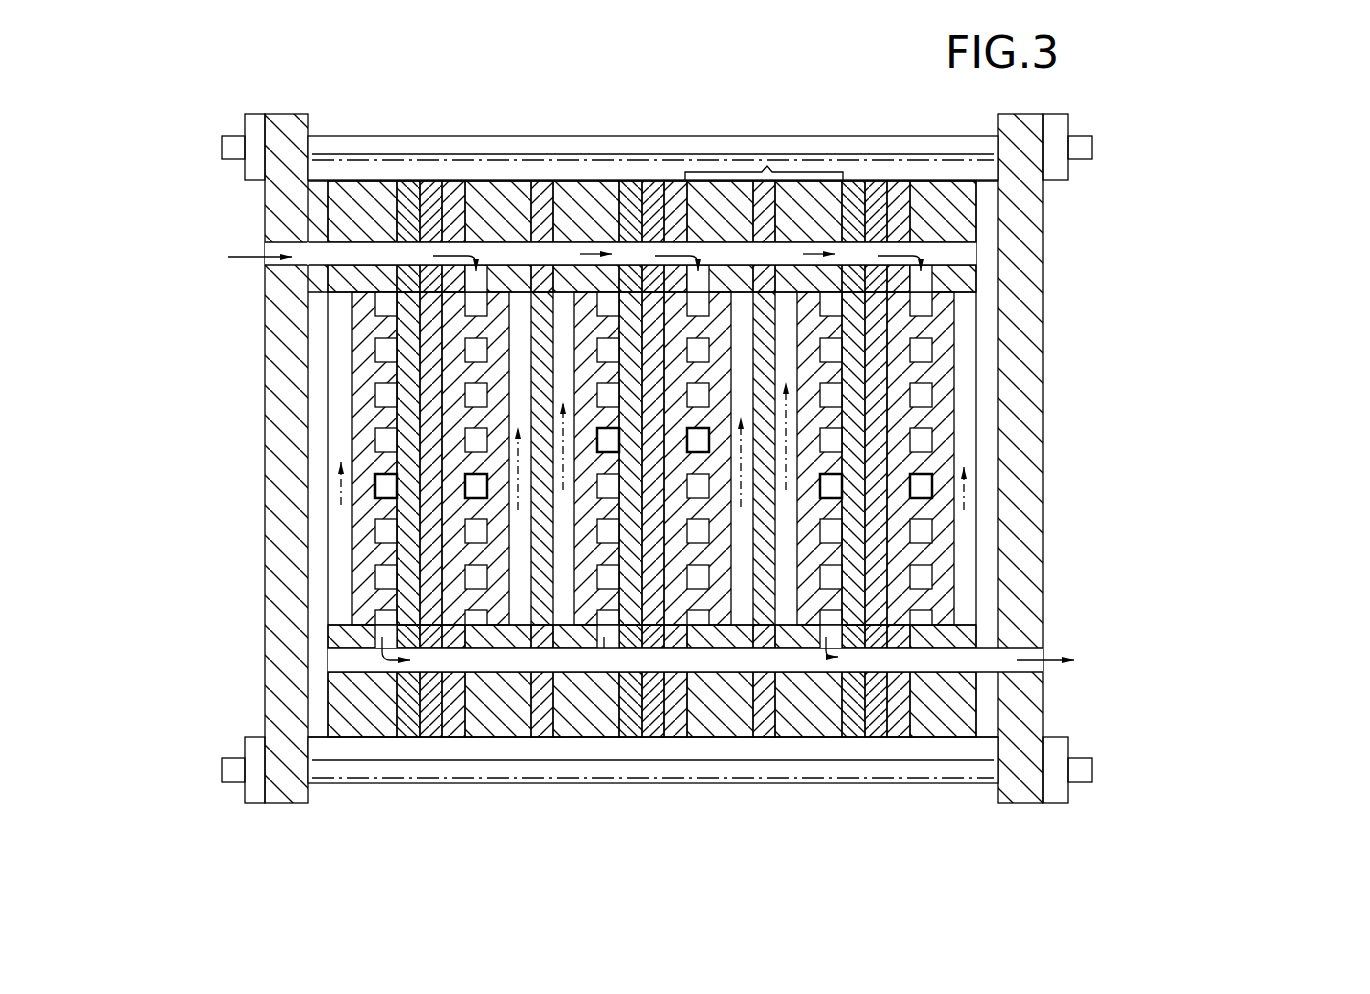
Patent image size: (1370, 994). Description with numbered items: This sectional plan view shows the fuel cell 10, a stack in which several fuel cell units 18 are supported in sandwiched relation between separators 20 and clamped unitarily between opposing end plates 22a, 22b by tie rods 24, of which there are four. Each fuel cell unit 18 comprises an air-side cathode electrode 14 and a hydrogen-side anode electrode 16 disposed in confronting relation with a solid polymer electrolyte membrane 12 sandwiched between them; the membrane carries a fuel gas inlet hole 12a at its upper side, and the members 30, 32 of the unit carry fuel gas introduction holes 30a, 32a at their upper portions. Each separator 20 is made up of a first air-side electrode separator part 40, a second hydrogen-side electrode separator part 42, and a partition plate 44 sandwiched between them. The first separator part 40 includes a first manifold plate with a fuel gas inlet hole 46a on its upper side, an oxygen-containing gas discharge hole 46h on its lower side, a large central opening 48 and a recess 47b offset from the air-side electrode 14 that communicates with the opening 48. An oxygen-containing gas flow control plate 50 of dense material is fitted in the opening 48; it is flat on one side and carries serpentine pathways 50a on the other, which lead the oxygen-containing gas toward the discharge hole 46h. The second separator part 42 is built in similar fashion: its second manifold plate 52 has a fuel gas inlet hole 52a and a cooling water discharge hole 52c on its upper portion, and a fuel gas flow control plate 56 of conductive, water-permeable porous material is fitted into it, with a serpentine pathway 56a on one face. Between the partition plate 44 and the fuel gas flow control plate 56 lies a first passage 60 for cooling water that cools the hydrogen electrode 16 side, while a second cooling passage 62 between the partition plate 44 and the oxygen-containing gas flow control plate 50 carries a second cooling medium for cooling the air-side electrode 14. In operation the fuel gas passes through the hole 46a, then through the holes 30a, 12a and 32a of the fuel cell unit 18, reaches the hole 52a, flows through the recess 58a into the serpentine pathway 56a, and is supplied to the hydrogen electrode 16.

The fuel cell 10 is at (836, 60).
The solid polymer electrolyte membrane 12 is at (947, 571).
The fuel gas inlet hole 12a is at (421, 129).
The air-side (cathode) electrode 14 is at (852, 623).
The hydrogen-side (anode) electrode 16 is at (898, 599).
The fuel cell unit 18 is at (653, 178).
The separator 20 is at (769, 164).
The end plate 22a is at (270, 553).
The end plate 22b is at (1030, 543).
The tie rod 24 is at (418, 781).
The separator plate 30 is at (878, 732).
The fuel gas introduction hole 30a is at (407, 192).
The separator plate 32 is at (903, 739).
The fuel gas introduction hole 32a is at (447, 192).
The first air-side electrode separator part 40 is at (368, 179).
The second hydrogen-side electrode separator part 42 is at (490, 179).
The partition plate 44 is at (542, 178).
The fuel gas inlet hole 46a is at (362, 210).
The oxygen-containing gas discharge hole 46h is at (362, 673).
The recess 47b is at (377, 634).
The opening 48 is at (338, 372).
The oxygen-containing gas flow control plate 50 is at (588, 621).
The serpentine pathways 50a is at (826, 582).
The second manifold plate 52 is at (482, 190).
The fuel gas inlet hole 52a is at (510, 243).
The cooling water discharge hole 52c is at (924, 247).
The fuel gas flow control plate 56 is at (959, 420).
The serpentine pathway 56a is at (931, 346).
The recess 58a is at (470, 281).
The first passage 60 is at (518, 619).
The second cooling passage 62 is at (570, 624).